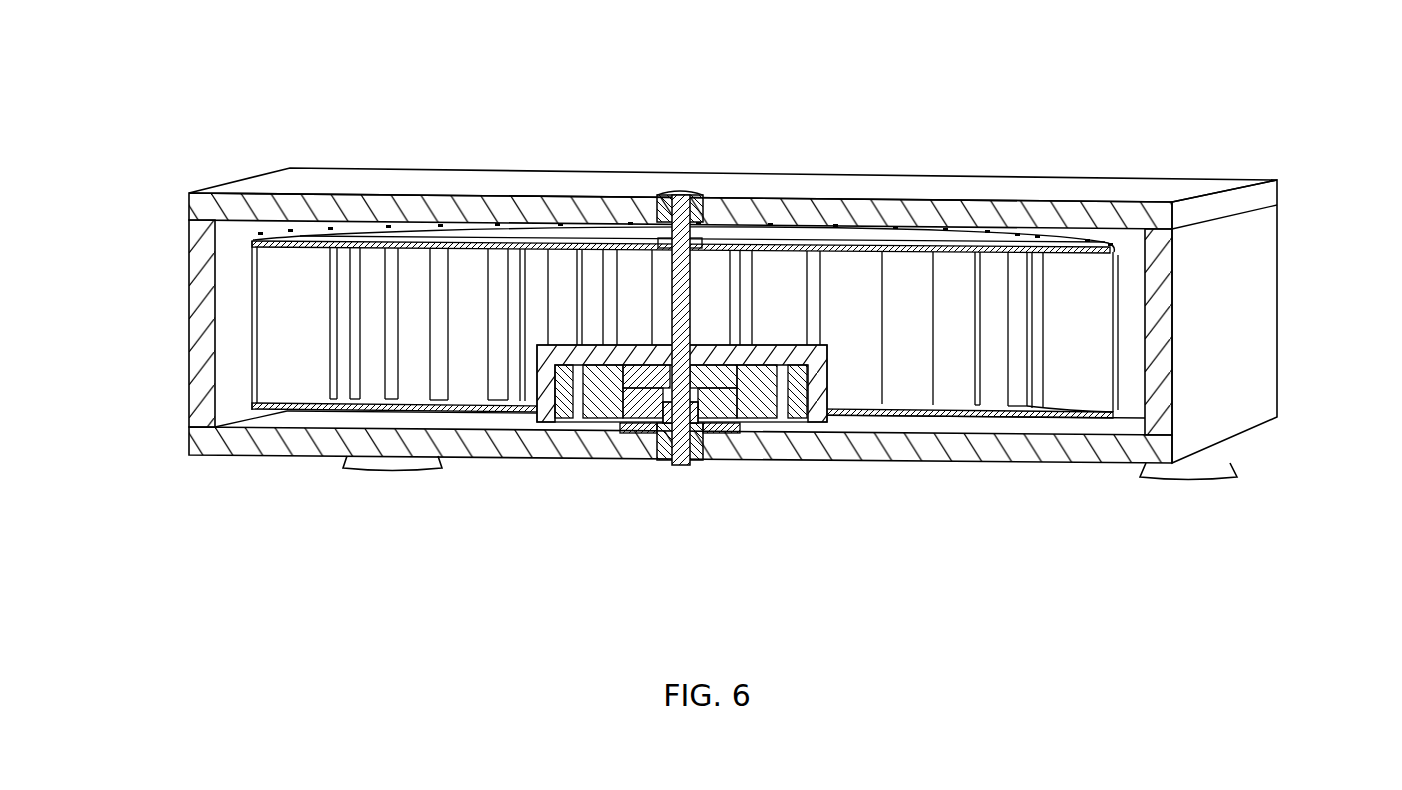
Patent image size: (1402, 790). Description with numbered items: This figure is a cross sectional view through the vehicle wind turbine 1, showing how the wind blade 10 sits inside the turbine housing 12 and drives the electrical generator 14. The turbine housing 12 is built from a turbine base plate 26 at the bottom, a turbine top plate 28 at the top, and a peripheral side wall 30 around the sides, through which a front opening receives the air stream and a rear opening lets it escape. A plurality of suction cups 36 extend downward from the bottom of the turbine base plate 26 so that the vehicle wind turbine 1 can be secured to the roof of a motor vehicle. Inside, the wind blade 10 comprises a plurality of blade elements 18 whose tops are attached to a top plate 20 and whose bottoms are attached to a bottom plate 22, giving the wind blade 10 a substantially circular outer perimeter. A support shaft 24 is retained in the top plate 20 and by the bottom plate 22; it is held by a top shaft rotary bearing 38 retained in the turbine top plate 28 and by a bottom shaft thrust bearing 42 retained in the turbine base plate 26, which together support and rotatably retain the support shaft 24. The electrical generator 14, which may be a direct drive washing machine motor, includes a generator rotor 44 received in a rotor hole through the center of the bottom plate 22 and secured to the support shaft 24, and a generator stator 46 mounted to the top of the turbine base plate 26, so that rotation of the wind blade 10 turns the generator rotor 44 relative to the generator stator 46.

The vehicle wind turbine 1 is at (1117, 116).
The wind blade 10 is at (1016, 434).
The turbine housing 12 is at (166, 395).
The electrical generator 14 is at (803, 470).
The blade elements 18 is at (283, 272).
The top plate 20 is at (963, 240).
The bottom plate 22 is at (931, 418).
The support shaft 24 is at (681, 466).
The turbine base plate 26 is at (548, 450).
The turbine top plate 28 is at (290, 193).
The peripheral side wall 30 is at (1258, 278).
The suction cups 36 is at (1214, 482).
The top shaft rotary bearing 38 is at (696, 198).
The bottom shaft thrust bearing 42 is at (699, 460).
The generator rotor 44 is at (843, 345).
The generator stator 46 is at (600, 418).